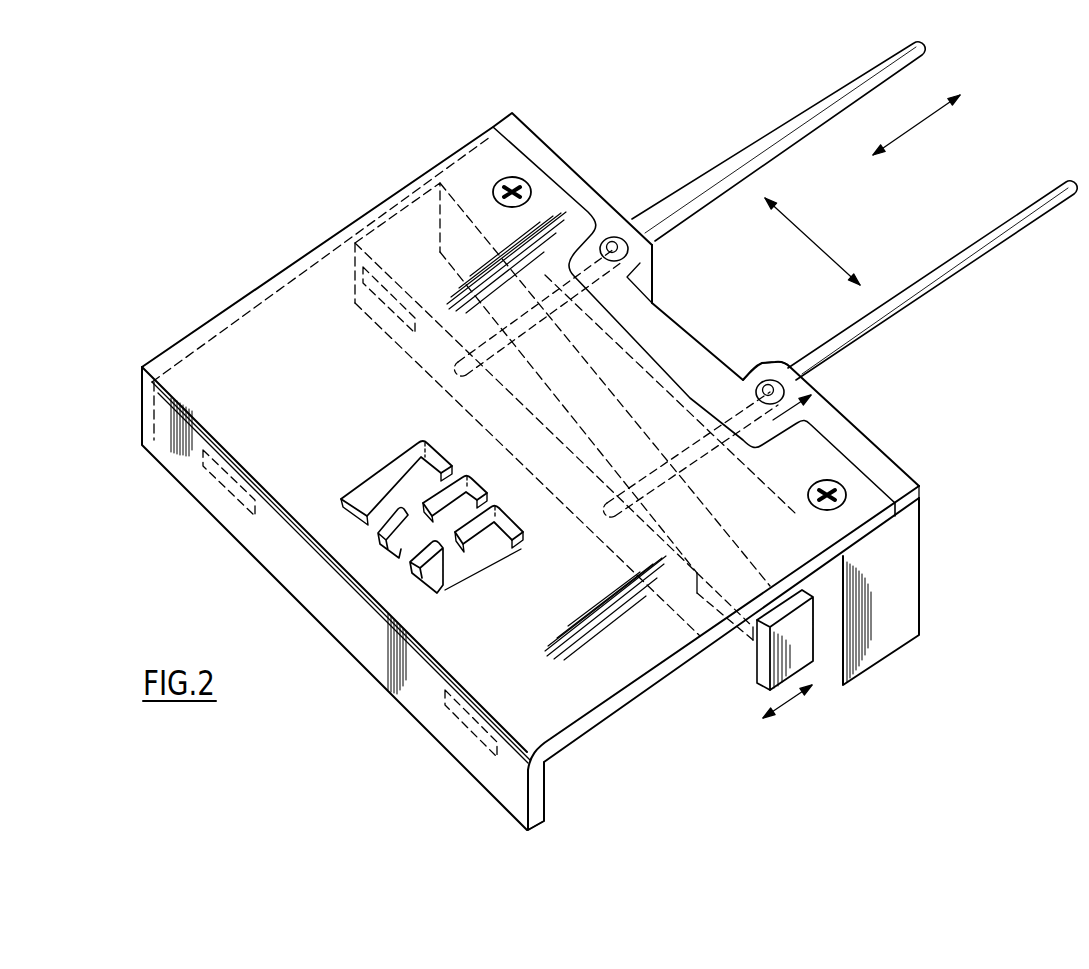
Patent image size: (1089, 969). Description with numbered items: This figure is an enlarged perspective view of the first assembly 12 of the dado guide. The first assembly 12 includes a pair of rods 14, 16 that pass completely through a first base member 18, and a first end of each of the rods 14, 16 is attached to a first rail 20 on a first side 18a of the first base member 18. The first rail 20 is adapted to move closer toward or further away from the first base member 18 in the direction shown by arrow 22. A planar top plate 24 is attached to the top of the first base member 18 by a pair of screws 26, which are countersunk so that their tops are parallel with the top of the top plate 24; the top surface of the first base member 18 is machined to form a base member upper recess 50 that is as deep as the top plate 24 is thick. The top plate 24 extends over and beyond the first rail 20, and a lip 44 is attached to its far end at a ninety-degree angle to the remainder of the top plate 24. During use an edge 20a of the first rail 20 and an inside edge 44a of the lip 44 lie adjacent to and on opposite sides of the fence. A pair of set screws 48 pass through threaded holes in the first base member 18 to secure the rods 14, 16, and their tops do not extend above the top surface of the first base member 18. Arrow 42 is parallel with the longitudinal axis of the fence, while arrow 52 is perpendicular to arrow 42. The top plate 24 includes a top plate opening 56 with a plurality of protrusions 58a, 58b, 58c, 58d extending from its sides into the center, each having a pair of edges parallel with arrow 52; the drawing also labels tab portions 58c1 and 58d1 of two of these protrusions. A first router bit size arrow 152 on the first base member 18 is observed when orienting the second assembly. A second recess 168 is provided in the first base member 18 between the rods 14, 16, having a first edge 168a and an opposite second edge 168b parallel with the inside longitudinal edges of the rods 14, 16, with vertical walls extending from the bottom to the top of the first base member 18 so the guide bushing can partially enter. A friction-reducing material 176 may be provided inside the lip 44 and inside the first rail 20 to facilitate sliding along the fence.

The first assembly 12 is at (340, 168).
The rod 14 is at (920, 50).
The rod 16 is at (975, 238).
The first base member 18 is at (900, 577).
The first side of the first base member 18a is at (830, 625).
The first rail 20 is at (803, 640).
The edge of the first rail 20a is at (762, 660).
The arrow 22 is at (786, 712).
The planar top plate 24 is at (573, 700).
The screw 26 is at (523, 181).
The arrow 42 is at (811, 237).
The lip 44 is at (520, 780).
The inside edge of the lip 44a is at (545, 793).
The set screw 48 is at (615, 236).
The base member upper recess 50 is at (466, 160).
The arrow 52 is at (907, 131).
The top plate opening 56 is at (403, 497).
The protrusion 58a is at (373, 515).
The protrusion 58b is at (440, 592).
The protrusion 58c is at (468, 520).
The third contact clip tab 58c1 is at (485, 525).
The protrusion 58d is at (438, 478).
The fourth contact clip tab 58d1 is at (426, 465).
The first router bit size arrow 152 is at (790, 426).
The second recess 168 is at (683, 327).
The first edge of the second recess 168a is at (648, 278).
The second edge of the second recess 168b is at (773, 364).
The friction-reducing material 176 is at (358, 278).